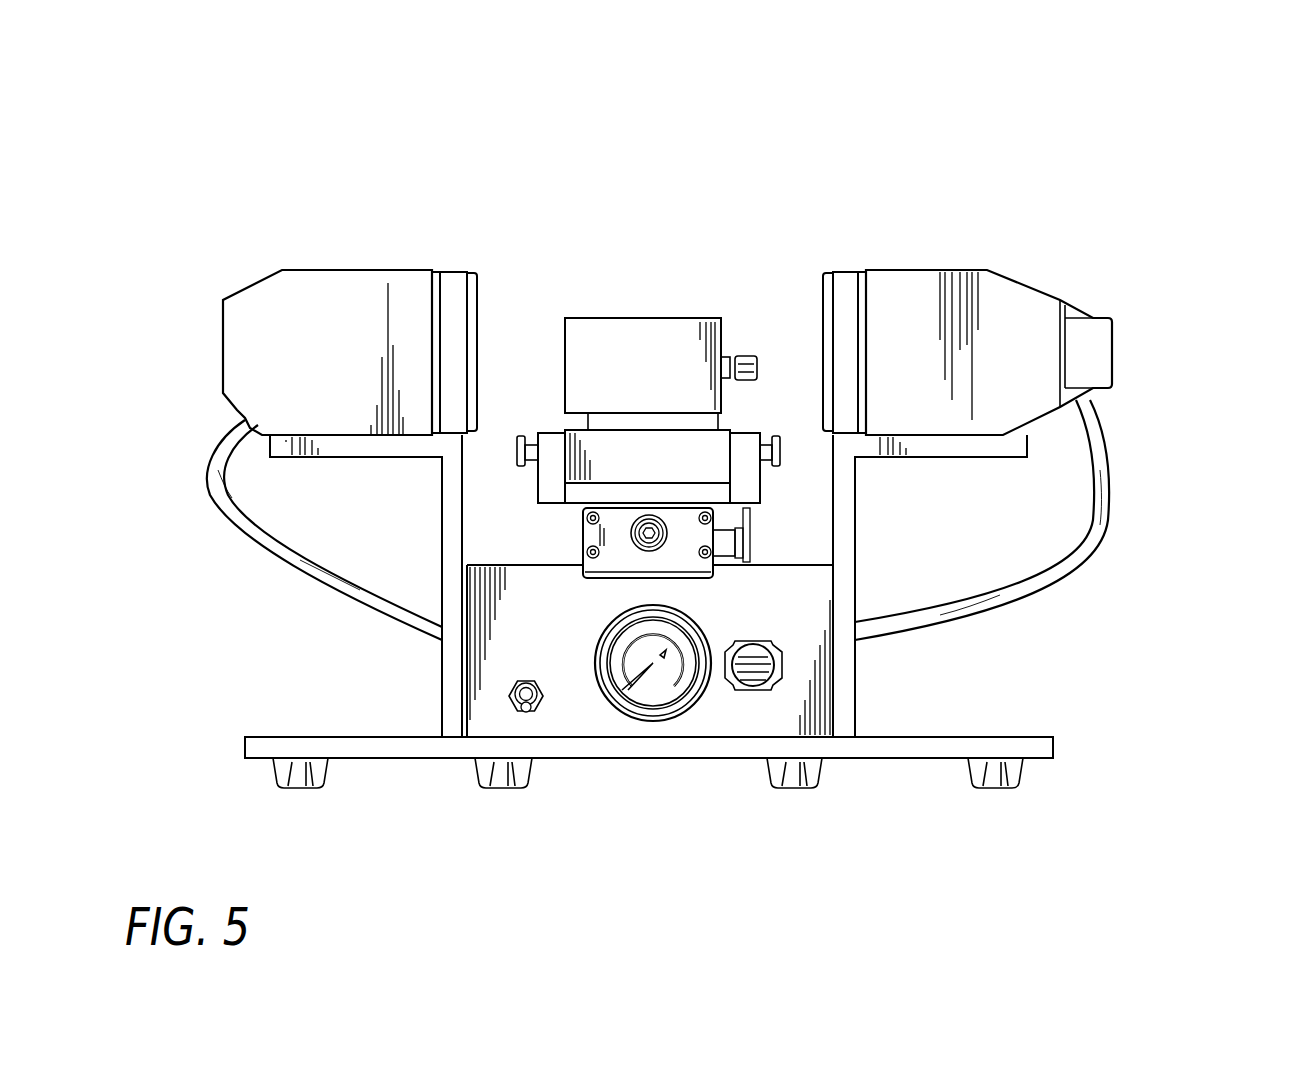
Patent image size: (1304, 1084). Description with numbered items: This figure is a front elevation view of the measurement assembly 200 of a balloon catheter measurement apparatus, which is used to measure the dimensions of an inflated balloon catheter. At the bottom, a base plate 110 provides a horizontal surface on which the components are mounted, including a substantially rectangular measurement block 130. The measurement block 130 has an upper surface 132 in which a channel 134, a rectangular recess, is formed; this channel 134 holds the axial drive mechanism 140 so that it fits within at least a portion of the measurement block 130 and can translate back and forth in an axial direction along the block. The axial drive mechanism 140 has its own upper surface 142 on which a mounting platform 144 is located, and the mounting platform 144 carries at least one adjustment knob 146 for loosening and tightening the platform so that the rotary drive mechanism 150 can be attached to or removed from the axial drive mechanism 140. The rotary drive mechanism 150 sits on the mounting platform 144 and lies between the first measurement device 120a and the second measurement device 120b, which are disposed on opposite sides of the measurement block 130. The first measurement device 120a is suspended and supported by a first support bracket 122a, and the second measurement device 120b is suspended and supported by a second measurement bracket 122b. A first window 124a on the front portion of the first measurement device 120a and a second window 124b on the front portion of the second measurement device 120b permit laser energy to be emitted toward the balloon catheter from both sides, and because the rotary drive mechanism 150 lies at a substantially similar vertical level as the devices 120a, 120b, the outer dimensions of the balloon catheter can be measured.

The measurement assembly 200 is at (666, 178).
The base plate 110 is at (1003, 745).
The first measurement device 120a is at (258, 300).
The second measurement device 120b is at (1028, 300).
The first support bracket 122a is at (290, 447).
The second measurement bracket 122b is at (983, 450).
The first window 124a is at (460, 283).
The second window 124b is at (842, 285).
The measurement block 130 is at (573, 718).
The upper surface 132 is at (517, 562).
The channel 134 is at (607, 575).
The axial drive mechanism 140 is at (685, 563).
The upper surface 142 is at (747, 512).
The mounting platform 144 is at (755, 465).
The adjustment knob 146 is at (780, 445).
The rotary drive mechanism 150 is at (598, 330).